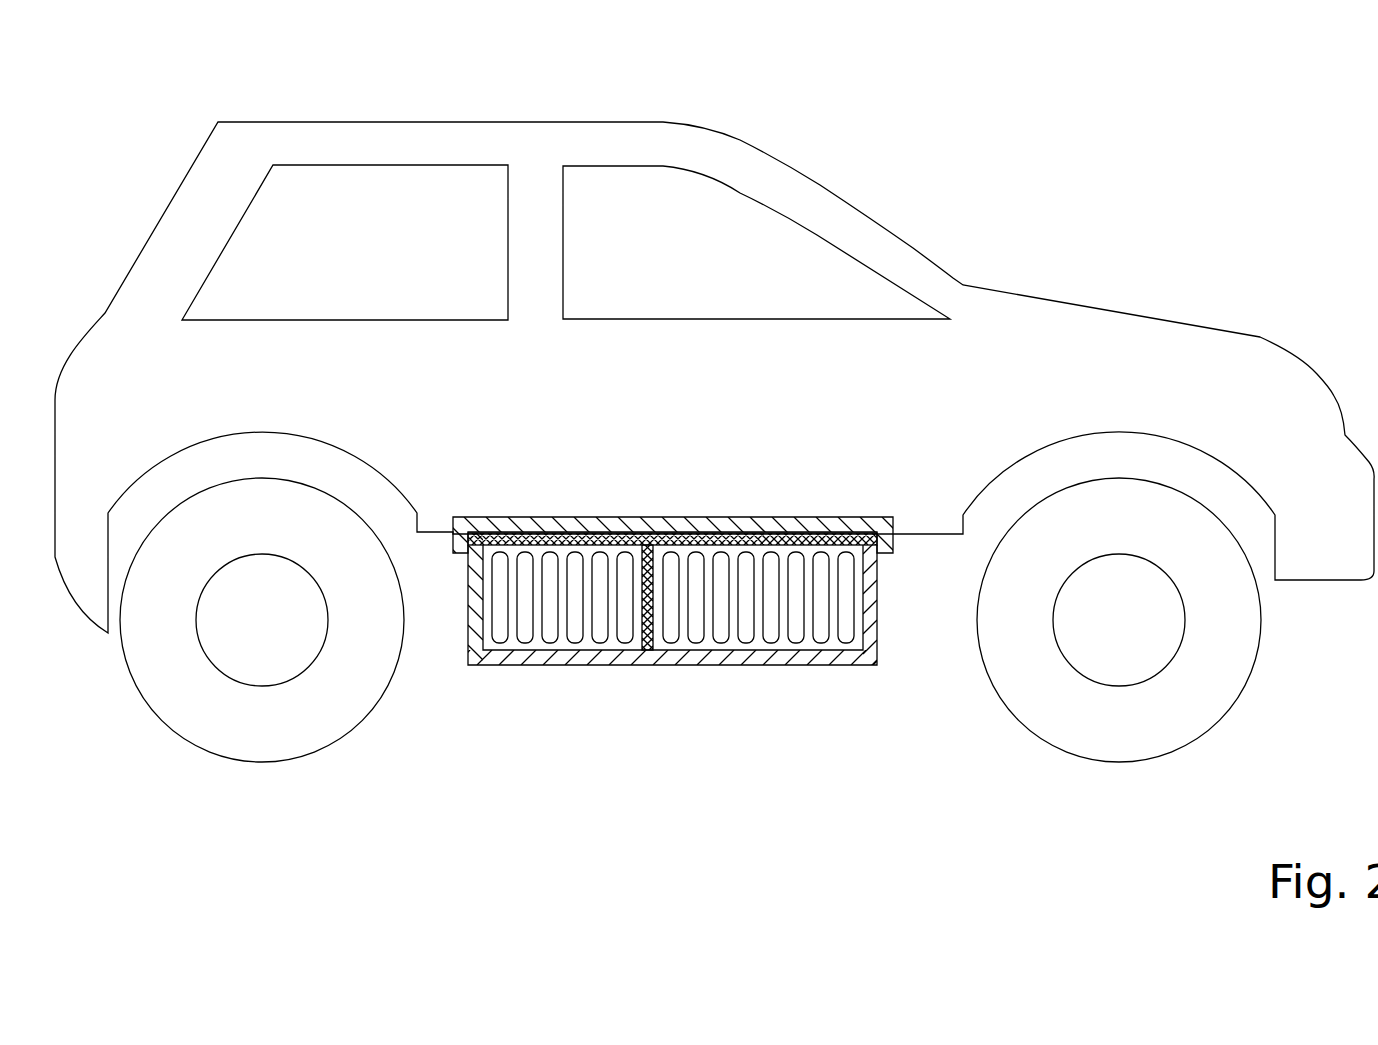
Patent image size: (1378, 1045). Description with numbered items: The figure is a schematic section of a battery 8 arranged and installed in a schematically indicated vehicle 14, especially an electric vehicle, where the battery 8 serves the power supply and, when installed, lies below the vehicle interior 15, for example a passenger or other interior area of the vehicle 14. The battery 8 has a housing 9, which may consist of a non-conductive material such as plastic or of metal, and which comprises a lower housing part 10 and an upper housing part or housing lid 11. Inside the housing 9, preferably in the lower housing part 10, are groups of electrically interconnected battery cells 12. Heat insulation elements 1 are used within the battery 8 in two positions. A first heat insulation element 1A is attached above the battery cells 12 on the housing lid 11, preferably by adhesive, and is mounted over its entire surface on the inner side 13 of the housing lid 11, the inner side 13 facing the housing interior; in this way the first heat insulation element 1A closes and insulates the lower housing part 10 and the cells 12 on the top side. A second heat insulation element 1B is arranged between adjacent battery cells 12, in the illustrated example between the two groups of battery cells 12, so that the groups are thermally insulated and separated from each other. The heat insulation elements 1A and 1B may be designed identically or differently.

The heat insulation element 1 is at (660, 530).
The first heat insulation element 1A is at (553, 530).
The second heat insulation element 1B is at (648, 640).
The battery 8 is at (818, 483).
The housing 9 is at (880, 655).
The lower housing part 10 is at (684, 665).
The housing lid 11 is at (492, 521).
The battery cells 12 is at (673, 419).
The inner side 13 is at (743, 543).
The vehicle 14 is at (714, 399).
The vehicle interior 15 is at (658, 208).